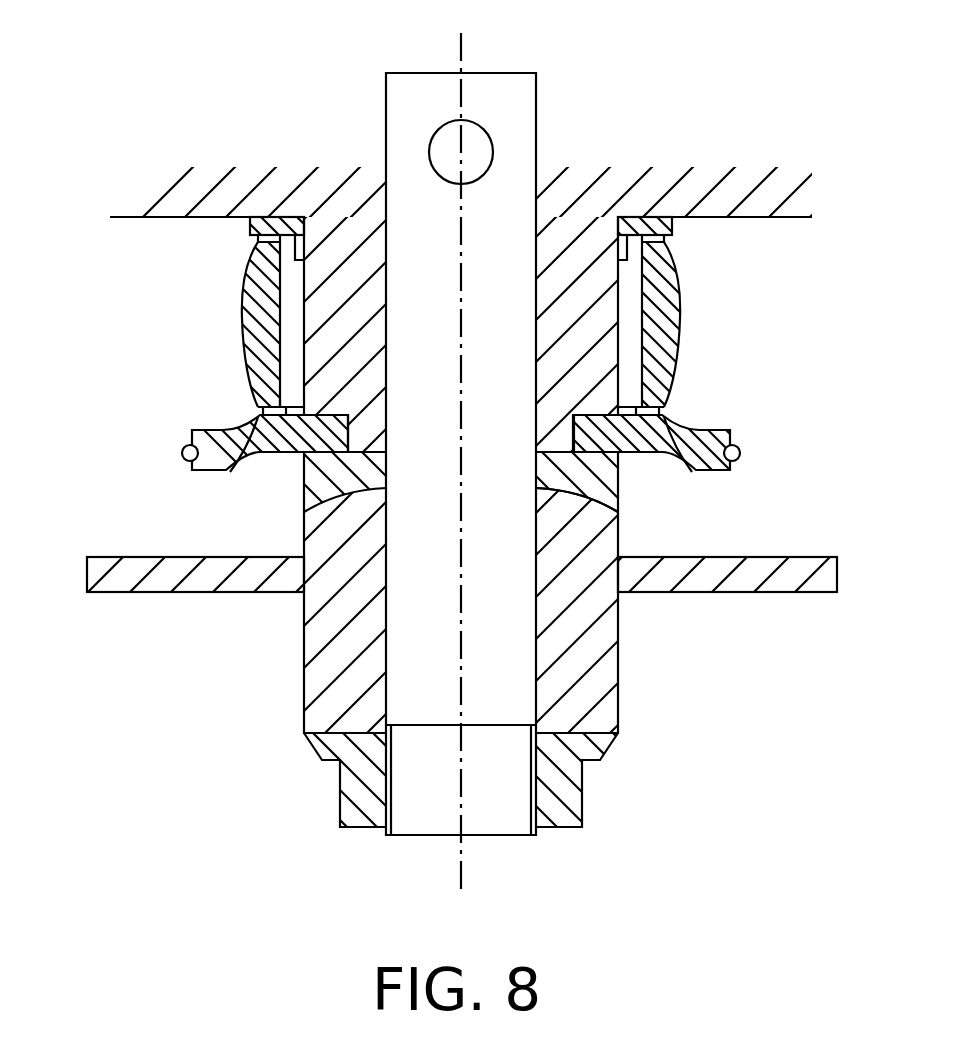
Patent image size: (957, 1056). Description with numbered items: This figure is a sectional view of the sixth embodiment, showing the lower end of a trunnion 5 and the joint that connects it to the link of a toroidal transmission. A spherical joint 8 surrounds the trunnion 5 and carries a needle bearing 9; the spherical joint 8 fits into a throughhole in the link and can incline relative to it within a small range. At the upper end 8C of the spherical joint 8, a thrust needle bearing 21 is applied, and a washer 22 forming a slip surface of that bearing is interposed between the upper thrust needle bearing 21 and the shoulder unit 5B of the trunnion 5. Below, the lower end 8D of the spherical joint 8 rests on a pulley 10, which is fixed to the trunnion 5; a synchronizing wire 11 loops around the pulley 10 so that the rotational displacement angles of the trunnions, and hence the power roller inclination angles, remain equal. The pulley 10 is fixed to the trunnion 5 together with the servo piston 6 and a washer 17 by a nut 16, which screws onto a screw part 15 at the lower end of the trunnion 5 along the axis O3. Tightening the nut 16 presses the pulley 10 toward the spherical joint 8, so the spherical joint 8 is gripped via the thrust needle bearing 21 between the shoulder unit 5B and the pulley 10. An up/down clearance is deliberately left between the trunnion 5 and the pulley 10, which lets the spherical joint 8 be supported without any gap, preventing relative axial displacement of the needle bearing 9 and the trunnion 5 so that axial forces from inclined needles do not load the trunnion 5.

The trunnion 5 is at (348, 197).
The shoulder unit 5B is at (148, 218).
The servo piston 6 is at (175, 578).
The spherical joint 8 is at (260, 277).
The upper end of elastic bushing 8C is at (283, 235).
The lower end of the spherical joint 8D is at (226, 472).
The needle bearing 9 is at (293, 310).
The pulley 10 is at (193, 473).
The synchronizing wire 11 is at (183, 450).
The screw part 15 is at (437, 823).
The nut 16 is at (352, 797).
The washer 17 is at (328, 490).
The thrust needle bearing 21 is at (262, 242).
The washer 22 is at (277, 227).
The axis O3 is at (464, 55).